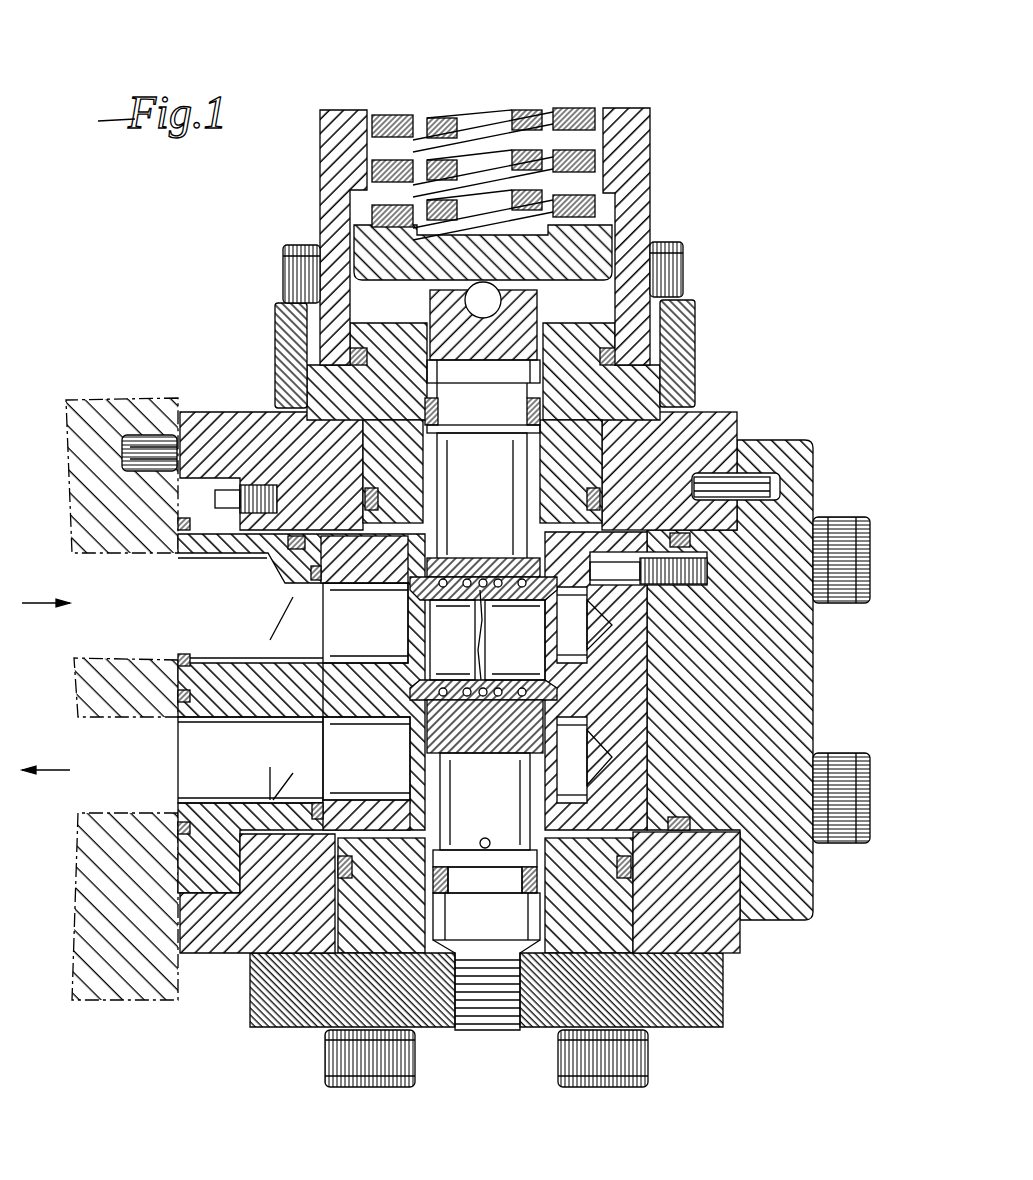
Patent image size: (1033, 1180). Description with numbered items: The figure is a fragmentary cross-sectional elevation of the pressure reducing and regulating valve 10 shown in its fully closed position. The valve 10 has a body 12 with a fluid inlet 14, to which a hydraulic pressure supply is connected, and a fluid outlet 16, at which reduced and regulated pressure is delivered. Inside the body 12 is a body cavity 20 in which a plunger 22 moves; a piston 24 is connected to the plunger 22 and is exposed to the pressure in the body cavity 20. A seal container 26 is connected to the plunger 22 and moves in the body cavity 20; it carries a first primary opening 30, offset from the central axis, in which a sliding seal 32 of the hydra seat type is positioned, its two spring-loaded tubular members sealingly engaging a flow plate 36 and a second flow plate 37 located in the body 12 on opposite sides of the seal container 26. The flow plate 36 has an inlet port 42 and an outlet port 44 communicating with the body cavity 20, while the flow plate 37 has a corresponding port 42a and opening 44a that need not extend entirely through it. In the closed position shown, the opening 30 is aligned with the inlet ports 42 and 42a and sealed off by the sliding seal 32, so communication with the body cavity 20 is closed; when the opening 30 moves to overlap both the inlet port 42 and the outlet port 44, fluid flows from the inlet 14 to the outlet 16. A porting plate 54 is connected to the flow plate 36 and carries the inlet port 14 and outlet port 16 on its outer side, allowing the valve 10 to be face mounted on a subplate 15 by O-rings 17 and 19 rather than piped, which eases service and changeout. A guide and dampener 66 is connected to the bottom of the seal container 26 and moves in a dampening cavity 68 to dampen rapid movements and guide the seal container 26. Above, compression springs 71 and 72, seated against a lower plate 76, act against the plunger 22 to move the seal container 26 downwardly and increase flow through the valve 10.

The pressure reducing and regulating valve 10 is at (716, 290).
The body 12 is at (510, 472).
The fluid inlet 14 is at (216, 618).
The subplate 15 is at (117, 972).
The fluid outlet 16 is at (239, 768).
The O-ring 17 is at (177, 532).
The O-ring 19 is at (177, 693).
The body cavity 20 is at (612, 455).
The plunger 22 is at (547, 538).
The piston 24 is at (427, 392).
The seal container 26 is at (493, 745).
The first primary opening 30 is at (527, 650).
The sliding seal 32 is at (452, 640).
The flow plate 36 is at (353, 680).
The second flow plate 37 is at (630, 687).
The inlet port 42 is at (372, 638).
The port 42a is at (580, 630).
The outlet port 44 is at (379, 775).
The opening 44a is at (580, 757).
The porting plate 54 is at (220, 887).
The guide and dampener 66 is at (480, 880).
The dampening cavity 68 is at (503, 923).
The compression spring 71 is at (585, 107).
The compression spring 72 is at (533, 107).
The lower plate 76 is at (632, 207).